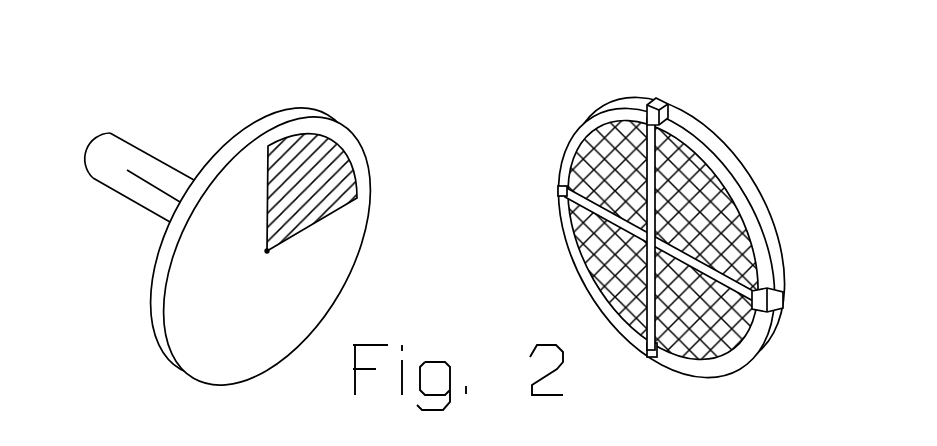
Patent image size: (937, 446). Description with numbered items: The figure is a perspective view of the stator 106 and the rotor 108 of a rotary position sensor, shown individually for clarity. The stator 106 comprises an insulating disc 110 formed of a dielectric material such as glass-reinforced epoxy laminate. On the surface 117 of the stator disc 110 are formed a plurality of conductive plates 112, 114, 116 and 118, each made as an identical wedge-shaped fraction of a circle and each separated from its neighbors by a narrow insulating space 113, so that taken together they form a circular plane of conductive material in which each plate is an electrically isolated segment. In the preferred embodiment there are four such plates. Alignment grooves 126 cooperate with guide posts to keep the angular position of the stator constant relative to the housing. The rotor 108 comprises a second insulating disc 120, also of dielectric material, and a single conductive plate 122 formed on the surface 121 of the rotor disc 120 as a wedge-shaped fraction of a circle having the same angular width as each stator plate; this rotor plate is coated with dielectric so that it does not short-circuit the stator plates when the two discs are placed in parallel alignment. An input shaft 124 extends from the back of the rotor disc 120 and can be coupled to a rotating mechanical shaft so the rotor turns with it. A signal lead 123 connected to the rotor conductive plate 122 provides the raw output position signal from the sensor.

The stator 106 is at (668, 223).
The rotor 108 is at (271, 221).
The insulating disc 110 is at (684, 236).
The conductive plate 112 is at (612, 153).
The insulating space 113 is at (578, 195).
The conductive plate 114 is at (612, 230).
The conductive plate 116 is at (730, 330).
The surface 117 is at (745, 237).
The conductive plate 118 is at (710, 202).
The insulating disc 120 is at (270, 221).
The surface 121 is at (309, 286).
The conductive plate 122 is at (300, 153).
The signal lead 123 is at (152, 185).
The input shaft 124 is at (157, 160).
The alignment grooves 126 is at (780, 293).